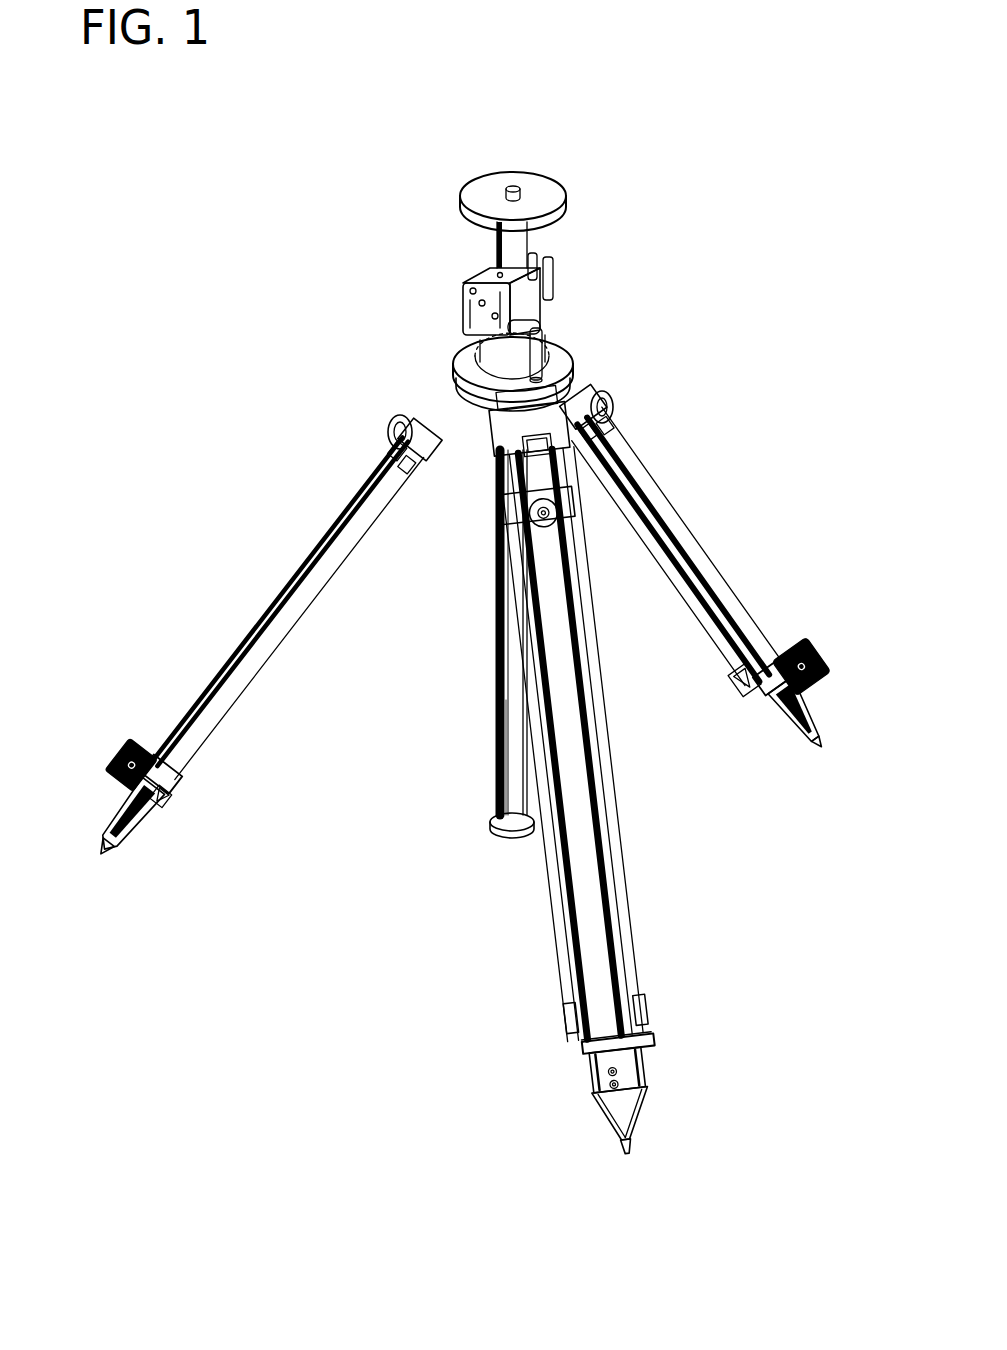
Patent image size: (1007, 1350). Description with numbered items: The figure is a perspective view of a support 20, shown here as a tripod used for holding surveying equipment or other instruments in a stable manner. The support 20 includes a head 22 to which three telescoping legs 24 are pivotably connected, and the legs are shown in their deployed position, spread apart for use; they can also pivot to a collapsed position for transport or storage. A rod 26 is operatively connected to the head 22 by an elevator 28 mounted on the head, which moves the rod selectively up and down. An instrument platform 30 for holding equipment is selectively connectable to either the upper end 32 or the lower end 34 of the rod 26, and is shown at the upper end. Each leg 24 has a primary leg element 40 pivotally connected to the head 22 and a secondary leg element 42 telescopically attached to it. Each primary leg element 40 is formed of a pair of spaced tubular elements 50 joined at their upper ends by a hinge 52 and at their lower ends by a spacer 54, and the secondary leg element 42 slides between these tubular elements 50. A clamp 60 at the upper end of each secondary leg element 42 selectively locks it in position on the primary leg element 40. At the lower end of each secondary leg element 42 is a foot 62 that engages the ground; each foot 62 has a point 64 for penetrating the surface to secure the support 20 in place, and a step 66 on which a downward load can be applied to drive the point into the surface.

The support 20 is at (728, 168).
The head 22 is at (584, 345).
The telescoping legs 24 is at (700, 526).
The rod 26 is at (492, 790).
The elevator 28 is at (558, 299).
The instrument platform 30 is at (572, 181).
The upper end 32 is at (470, 246).
The lower end 34 is at (490, 843).
The primary leg element 40 is at (520, 670).
The secondary leg element 42 is at (526, 606).
The tubular elements 50 is at (718, 640).
The hinge 52 is at (598, 386).
The spacer 54 is at (742, 705).
The clamp 60 is at (400, 416).
The feet 62 is at (118, 833).
The points 64 is at (110, 858).
The step 66 is at (806, 650).